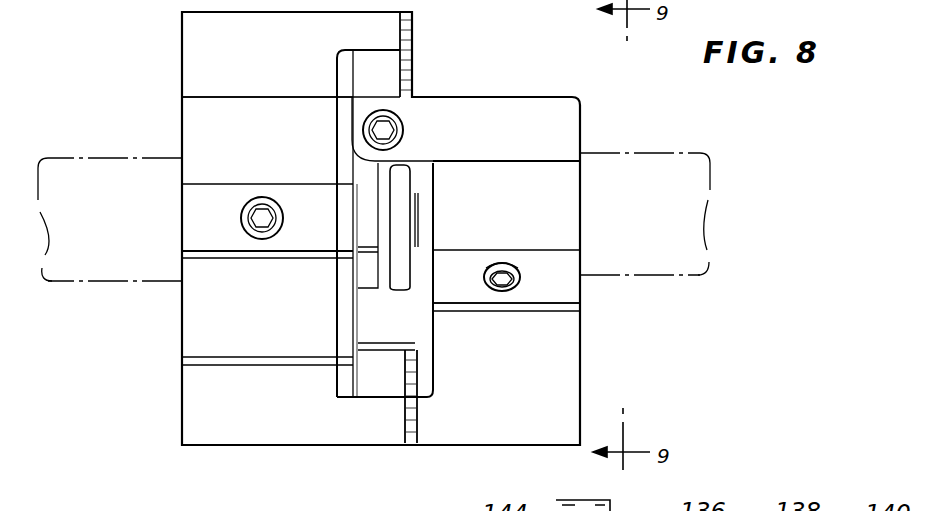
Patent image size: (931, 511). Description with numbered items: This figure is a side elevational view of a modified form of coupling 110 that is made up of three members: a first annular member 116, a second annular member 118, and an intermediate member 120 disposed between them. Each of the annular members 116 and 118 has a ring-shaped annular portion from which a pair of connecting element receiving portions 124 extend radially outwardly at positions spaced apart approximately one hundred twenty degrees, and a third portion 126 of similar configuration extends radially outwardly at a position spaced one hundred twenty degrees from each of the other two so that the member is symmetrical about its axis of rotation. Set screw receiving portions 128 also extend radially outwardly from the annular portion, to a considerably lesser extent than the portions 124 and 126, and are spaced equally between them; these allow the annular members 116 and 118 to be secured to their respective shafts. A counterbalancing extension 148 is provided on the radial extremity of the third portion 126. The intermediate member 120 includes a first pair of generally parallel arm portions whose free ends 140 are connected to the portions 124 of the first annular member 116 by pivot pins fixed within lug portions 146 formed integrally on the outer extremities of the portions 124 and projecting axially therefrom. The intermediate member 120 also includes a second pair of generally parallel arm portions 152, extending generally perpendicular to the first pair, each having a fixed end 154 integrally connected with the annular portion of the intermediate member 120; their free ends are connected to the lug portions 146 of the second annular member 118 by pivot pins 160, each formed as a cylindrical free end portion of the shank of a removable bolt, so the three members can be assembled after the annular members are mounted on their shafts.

The coupling 110 is at (458, 87).
The first annular member 116 is at (180, 60).
The second annular member 118 is at (588, 372).
The intermediate member 120 is at (415, 258).
The connecting element receiving portions 124 is at (196, 80).
The third portion 126 is at (572, 345).
The set screw receiving portions 128 is at (202, 215).
The free end 140 is at (368, 66).
The lug portions 146 is at (397, 27).
The counterbalancing extension 148 is at (336, 252).
The second pair of arm portions 152 is at (385, 182).
The fixed end 154 is at (378, 300).
The pivot pins 160 is at (368, 131).